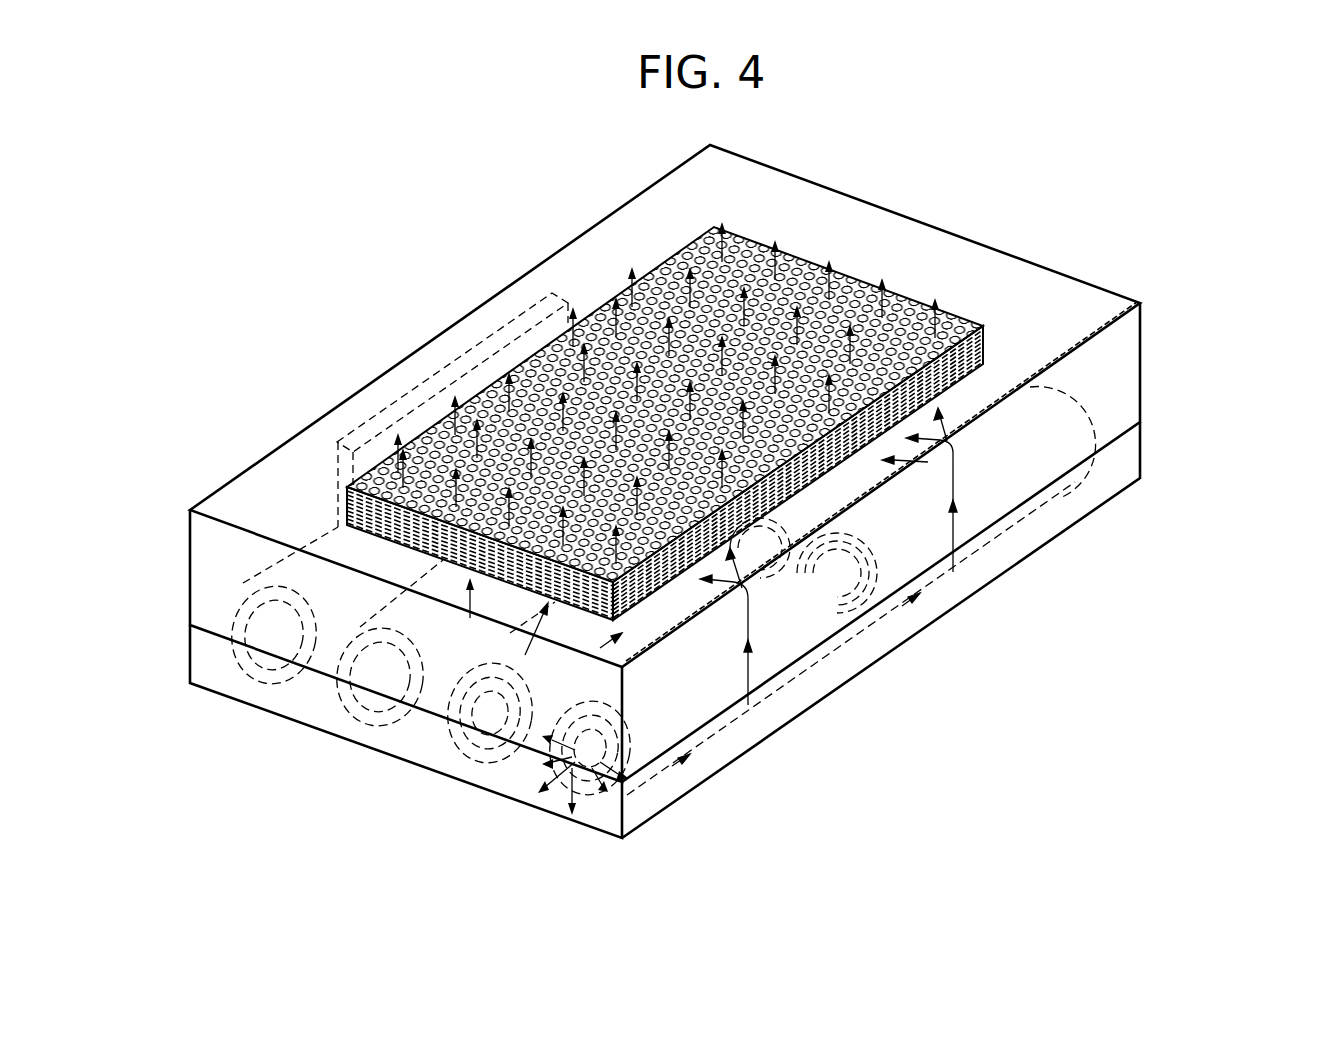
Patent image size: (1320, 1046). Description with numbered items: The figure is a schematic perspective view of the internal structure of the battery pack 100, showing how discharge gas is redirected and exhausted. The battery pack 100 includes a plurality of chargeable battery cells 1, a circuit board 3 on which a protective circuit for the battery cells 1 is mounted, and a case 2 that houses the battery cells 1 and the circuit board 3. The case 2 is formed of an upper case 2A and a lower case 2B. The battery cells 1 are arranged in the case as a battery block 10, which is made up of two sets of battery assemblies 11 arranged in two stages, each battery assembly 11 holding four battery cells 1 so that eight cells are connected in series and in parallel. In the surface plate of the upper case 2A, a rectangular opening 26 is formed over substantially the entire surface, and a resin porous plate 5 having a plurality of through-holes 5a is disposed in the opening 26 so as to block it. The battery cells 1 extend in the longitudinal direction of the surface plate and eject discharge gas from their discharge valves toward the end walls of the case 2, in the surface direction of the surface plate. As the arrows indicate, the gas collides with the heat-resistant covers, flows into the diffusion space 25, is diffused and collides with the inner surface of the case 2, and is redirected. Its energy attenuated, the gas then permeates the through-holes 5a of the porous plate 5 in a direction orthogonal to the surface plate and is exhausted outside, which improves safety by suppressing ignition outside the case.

The battery pack 100 is at (253, 238).
The case 2 is at (1257, 162).
The upper case 2A is at (1046, 213).
The lower case 2B is at (1170, 440).
The opening 26 is at (605, 298).
The battery block 10 is at (1115, 680).
The battery assembly 11 is at (1026, 556).
The battery cell 1 is at (1017, 483).
The diffusion space 25 is at (990, 383).
The circuit board 3 is at (433, 378).
The porous plate 5 is at (800, 267).
The through-hole 5a is at (613, 293).